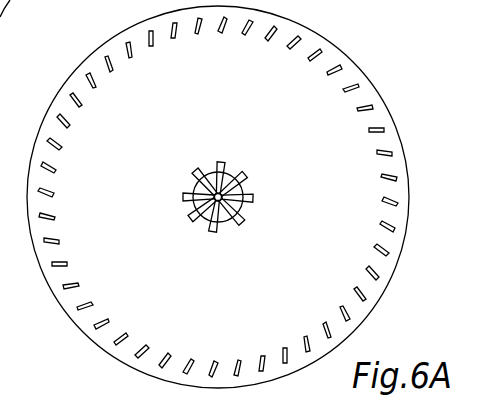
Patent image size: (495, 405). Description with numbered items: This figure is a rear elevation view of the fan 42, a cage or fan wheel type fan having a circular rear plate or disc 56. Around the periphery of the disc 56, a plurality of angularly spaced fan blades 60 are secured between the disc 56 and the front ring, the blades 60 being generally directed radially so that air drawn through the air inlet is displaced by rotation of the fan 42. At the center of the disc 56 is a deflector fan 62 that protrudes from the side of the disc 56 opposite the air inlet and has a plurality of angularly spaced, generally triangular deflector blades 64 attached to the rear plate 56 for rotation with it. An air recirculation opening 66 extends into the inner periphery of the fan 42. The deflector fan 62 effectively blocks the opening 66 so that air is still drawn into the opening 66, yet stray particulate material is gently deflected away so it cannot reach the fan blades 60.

The fan 42 is at (85, 58).
The rear plate or disc 56 is at (207, 318).
The fan blades 60 is at (110, 66).
The deflector fan 62 is at (249, 172).
The deflector blades 64 is at (197, 168).
The air recirculation opening 66 is at (201, 214).